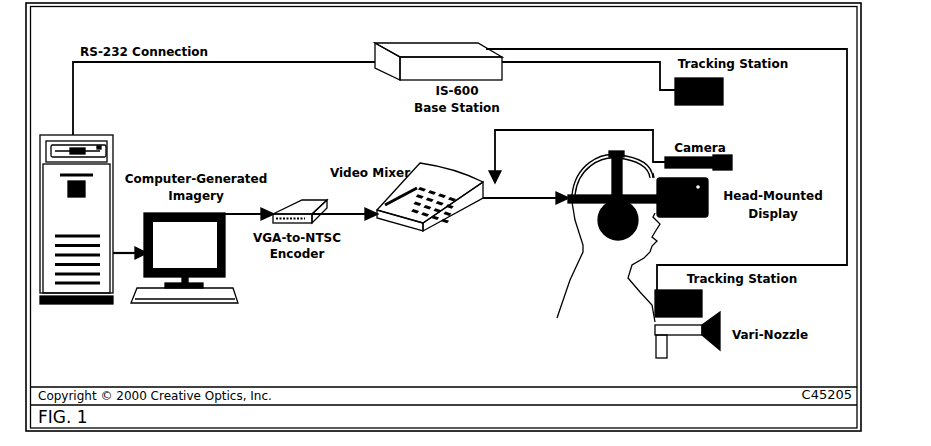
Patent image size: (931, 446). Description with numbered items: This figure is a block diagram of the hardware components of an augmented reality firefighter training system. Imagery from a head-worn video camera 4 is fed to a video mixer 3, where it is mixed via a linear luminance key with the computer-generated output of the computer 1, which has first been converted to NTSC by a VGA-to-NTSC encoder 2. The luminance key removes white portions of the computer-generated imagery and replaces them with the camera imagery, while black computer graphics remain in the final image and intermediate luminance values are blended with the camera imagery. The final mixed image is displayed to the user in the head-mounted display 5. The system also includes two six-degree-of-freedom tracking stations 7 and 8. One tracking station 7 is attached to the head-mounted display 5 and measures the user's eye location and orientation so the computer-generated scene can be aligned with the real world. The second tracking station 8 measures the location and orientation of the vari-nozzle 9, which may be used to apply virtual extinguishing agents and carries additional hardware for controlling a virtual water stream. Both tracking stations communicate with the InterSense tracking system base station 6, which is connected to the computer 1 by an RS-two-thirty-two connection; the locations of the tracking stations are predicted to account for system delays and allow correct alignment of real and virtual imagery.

The computer 1 is at (102, 305).
The VGA-to-NTSC encoder 2 is at (302, 200).
The video mixer 3 is at (413, 231).
The head-worn video camera 4 is at (732, 167).
The head-mounted display 5 is at (700, 217).
The IS-600 tracking system 6 is at (435, 43).
The tracking station 7 is at (723, 91).
The tracking station 8 is at (702, 303).
The vari-nozzle 9 is at (711, 350).